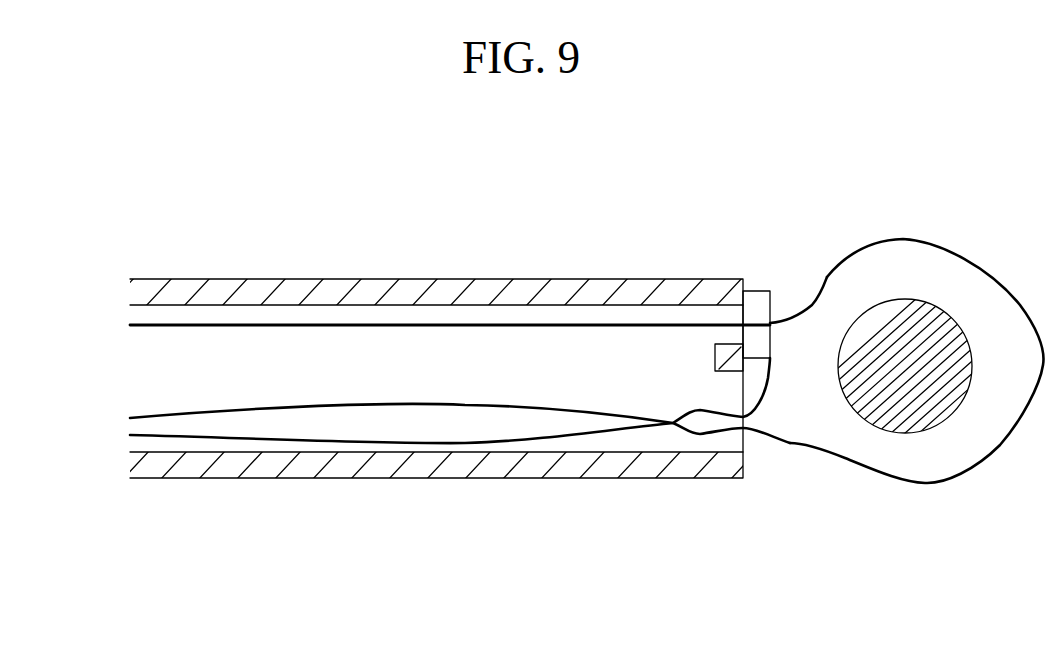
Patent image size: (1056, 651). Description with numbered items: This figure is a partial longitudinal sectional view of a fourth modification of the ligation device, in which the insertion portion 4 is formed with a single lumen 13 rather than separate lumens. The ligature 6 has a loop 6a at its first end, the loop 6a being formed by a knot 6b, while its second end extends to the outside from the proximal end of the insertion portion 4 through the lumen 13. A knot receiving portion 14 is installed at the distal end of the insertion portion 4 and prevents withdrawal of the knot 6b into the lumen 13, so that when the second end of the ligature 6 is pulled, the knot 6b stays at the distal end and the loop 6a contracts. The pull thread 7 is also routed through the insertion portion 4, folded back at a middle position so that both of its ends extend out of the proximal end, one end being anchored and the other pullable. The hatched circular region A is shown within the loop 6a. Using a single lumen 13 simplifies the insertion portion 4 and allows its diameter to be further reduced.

The insertion portion 4 is at (581, 243).
The ligature 6 is at (240, 323).
The loop 6a is at (925, 483).
The knot 6b is at (757, 291).
The pull thread 7 is at (465, 405).
The lumen 13 is at (397, 310).
The knot receiving portion 14 is at (715, 352).
The core cross section A is at (905, 299).